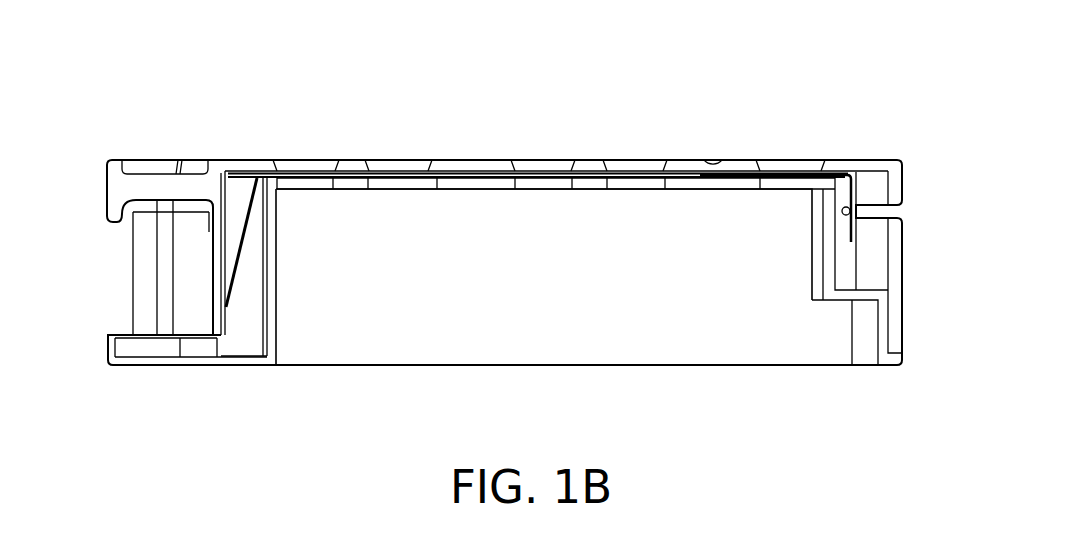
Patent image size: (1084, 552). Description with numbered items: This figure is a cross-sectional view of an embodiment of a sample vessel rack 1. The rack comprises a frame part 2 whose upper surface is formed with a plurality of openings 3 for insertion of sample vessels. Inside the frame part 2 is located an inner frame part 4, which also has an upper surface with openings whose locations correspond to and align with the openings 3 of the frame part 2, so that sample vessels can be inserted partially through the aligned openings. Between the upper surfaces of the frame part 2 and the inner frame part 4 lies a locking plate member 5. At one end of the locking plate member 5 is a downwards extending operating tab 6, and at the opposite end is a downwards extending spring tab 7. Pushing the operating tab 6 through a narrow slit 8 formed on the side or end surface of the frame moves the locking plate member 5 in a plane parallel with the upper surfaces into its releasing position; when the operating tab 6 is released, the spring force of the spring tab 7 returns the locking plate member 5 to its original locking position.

The sample vessel rack 1 is at (203, 110).
The frame part 2 is at (147, 188).
The openings 3 is at (398, 166).
The inner frame part 4 is at (272, 327).
The locking plate member 5 is at (505, 176).
The operating tab 6 is at (857, 225).
The spring tab 7 is at (240, 235).
The narrow slit 8 is at (880, 212).